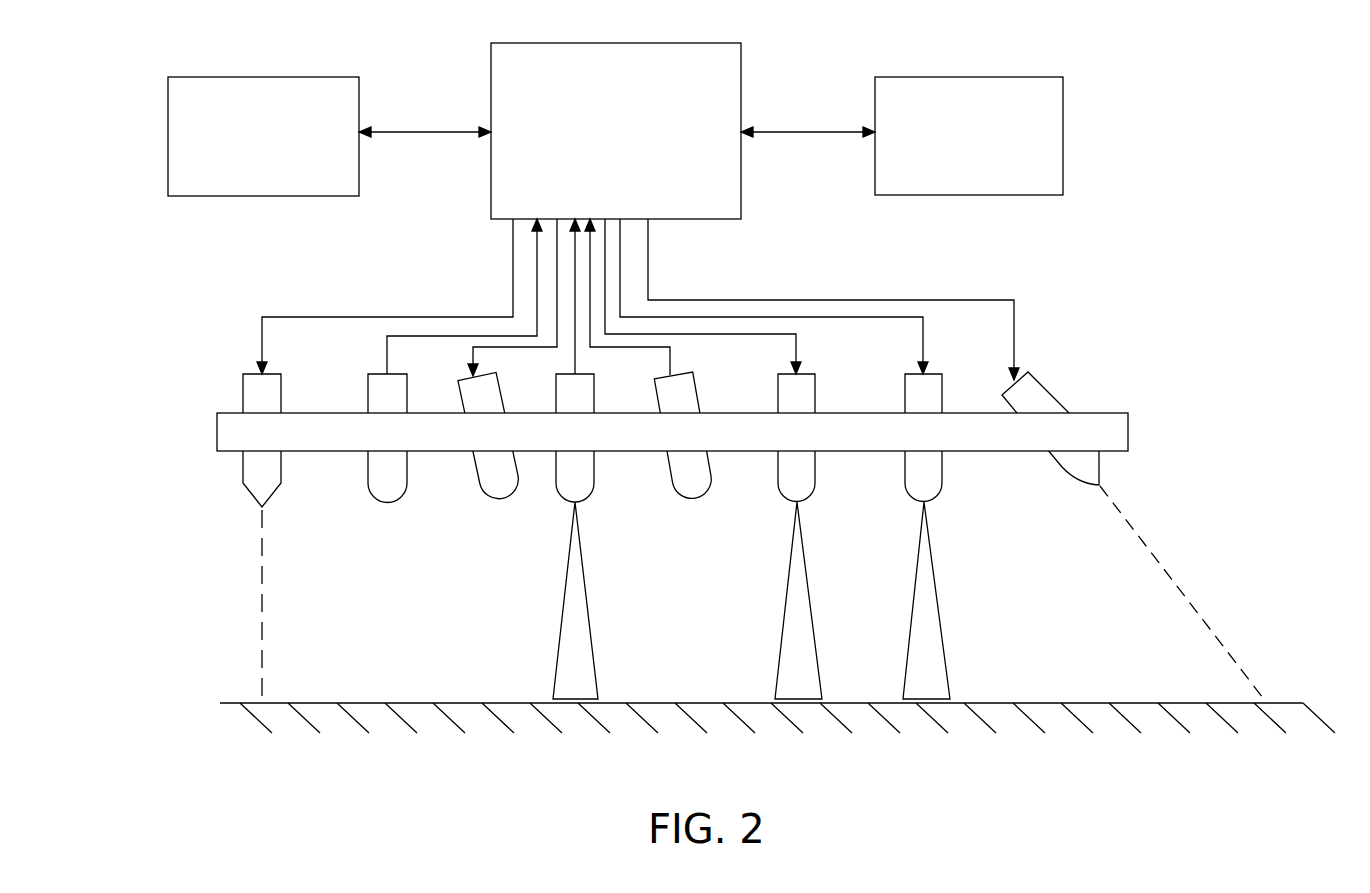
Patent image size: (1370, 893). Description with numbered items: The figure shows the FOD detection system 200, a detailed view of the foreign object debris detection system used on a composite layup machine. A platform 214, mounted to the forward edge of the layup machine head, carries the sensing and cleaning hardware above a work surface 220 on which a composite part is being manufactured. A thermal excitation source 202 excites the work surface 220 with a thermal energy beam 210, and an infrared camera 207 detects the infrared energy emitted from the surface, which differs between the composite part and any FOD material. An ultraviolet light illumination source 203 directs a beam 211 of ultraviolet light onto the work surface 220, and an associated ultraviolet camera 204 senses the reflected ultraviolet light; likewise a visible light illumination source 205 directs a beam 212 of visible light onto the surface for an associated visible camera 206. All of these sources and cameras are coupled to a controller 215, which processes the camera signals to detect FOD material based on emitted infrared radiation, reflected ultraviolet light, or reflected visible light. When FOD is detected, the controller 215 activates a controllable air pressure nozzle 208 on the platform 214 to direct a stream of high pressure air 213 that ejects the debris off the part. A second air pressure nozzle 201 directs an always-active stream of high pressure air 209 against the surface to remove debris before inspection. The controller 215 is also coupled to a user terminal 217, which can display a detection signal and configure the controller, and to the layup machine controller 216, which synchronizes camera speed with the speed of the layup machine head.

The FOD detection system 200 is at (1243, 218).
The second air pressure nozzle 201 is at (1062, 467).
The thermal excitation source 202 is at (942, 478).
The ultraviolet light illumination source 203 is at (815, 478).
The ultraviolet camera 204 is at (680, 494).
The visible light illumination source 205 is at (594, 472).
The visible camera 206 is at (506, 500).
The infrared camera 207 is at (407, 478).
The controllable air pressure nozzle 208 is at (281, 470).
The stream of high pressure air 209 is at (1147, 545).
The thermal energy beam 210 is at (940, 608).
The beam of ultraviolet light 211 is at (784, 613).
The beam of visible light 212 is at (591, 623).
The stream of high pressure air 213 is at (263, 607).
The platform 214 is at (1128, 430).
The controller 215 is at (622, 43).
The layup machine controller 216 is at (240, 77).
The user terminal 217 is at (957, 77).
The work surface 220 is at (1058, 704).